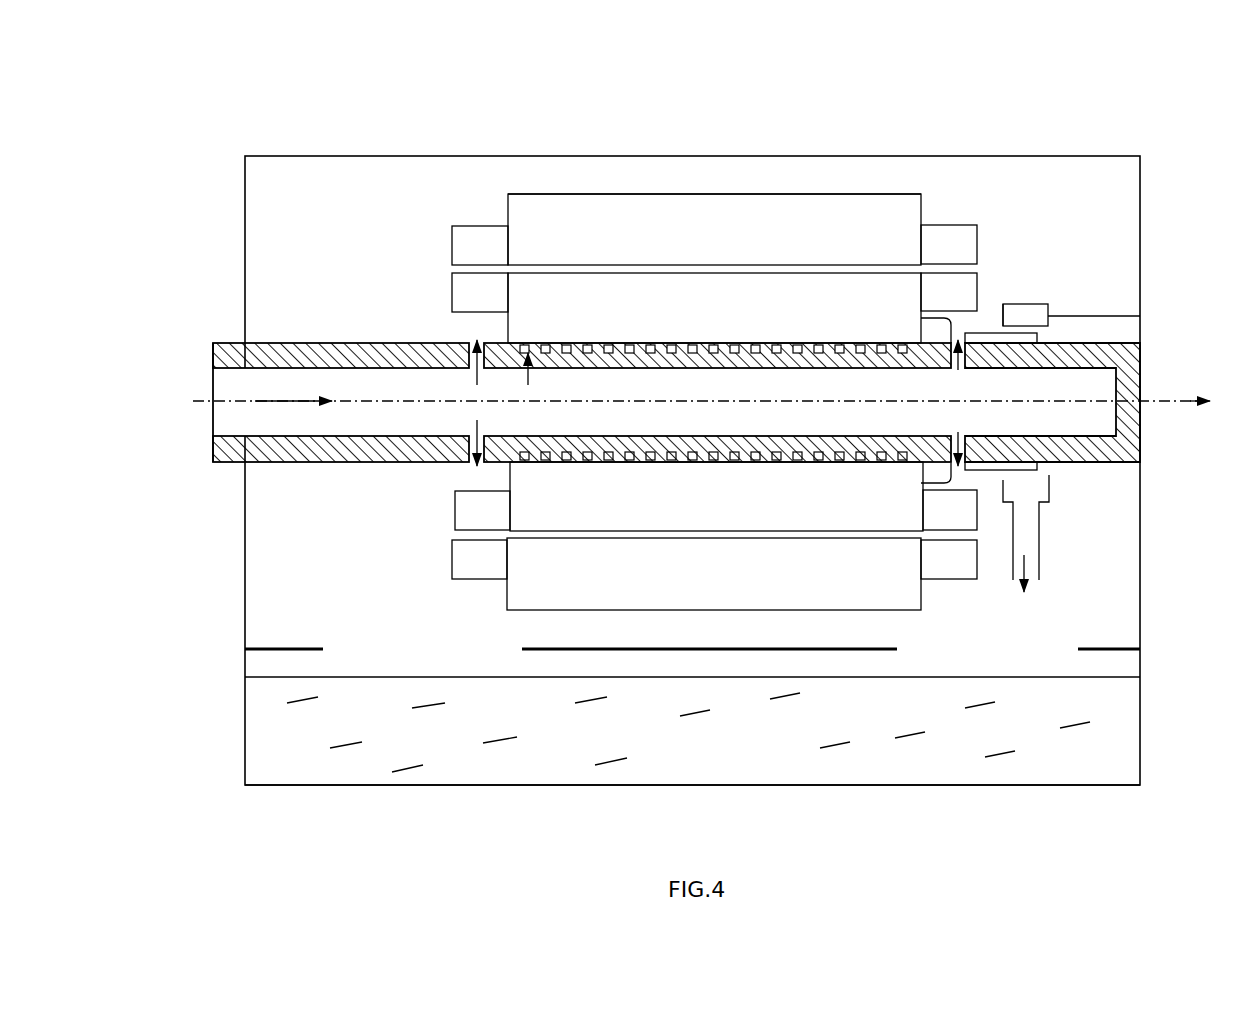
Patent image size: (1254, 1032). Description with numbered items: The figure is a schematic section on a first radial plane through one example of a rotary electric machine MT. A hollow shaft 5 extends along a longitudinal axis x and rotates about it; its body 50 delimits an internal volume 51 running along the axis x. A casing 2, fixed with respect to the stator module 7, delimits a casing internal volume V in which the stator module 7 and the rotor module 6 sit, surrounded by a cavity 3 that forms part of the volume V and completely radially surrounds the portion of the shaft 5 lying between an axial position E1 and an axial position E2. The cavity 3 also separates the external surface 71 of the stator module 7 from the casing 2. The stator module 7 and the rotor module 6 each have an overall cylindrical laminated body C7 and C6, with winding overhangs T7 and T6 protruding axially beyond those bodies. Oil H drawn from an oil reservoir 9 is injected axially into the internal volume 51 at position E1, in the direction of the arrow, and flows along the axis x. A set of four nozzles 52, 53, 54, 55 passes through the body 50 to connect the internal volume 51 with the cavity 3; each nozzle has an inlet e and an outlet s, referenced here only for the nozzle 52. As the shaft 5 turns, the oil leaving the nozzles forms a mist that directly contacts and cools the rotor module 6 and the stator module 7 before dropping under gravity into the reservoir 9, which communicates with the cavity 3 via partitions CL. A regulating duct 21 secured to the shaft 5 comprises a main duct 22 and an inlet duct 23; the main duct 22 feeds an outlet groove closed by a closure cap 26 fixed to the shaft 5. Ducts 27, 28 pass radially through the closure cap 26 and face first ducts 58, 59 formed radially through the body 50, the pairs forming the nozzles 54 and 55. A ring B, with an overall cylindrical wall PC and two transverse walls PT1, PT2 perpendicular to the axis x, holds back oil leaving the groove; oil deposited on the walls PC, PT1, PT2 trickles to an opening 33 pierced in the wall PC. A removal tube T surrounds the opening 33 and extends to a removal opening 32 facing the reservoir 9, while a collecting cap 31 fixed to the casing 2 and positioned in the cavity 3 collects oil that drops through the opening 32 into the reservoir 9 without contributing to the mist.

The casing 2 is at (272, 156).
The cavity 3 is at (260, 215).
The shaft 5 is at (237, 342).
The rotor module 6 is at (612, 283).
The stator module 7 is at (532, 210).
The oil reservoir 9 is at (245, 728).
The duct 21 is at (676, 375).
The main duct 22 is at (568, 368).
The inlet duct 23 is at (502, 368).
The closure cap 26 is at (1025, 340).
The duct 27 is at (952, 320).
The duct 28 is at (952, 474).
The collecting cap 31 is at (1037, 304).
The removal opening 32 is at (1039, 580).
The opening 33 is at (1042, 500).
The body 50 is at (629, 372).
The internal volume 51 is at (233, 422).
The nozzle 52 is at (477, 342).
The nozzle 53 is at (477, 434).
The nozzle 54 is at (958, 368).
The nozzle 55 is at (958, 433).
The first duct 58 is at (988, 360).
The first duct 59 is at (988, 443).
The external surface 71 is at (832, 194).
The rotary machine MT is at (314, 124).
The casing internal volume V is at (263, 177).
The axial position E1 is at (197, 402).
The axial position E2 is at (1118, 399).
The winding overhangs T7 is at (473, 235).
The winding overhangs T6 is at (470, 291).
The body C7 is at (572, 194).
The body C6 is at (698, 273).
The cylindrical wall PC is at (1033, 286).
The ring B is at (1053, 304).
The transverse wall PT1 is at (1003, 313).
The transverse wall PT2 is at (1137, 316).
The partitions CL is at (297, 648).
The oil H is at (512, 775).
The removal tube T is at (1012, 548).
The inlet e is at (482, 372).
The outlet s is at (482, 330).
The longitudinal axis x is at (709, 401).